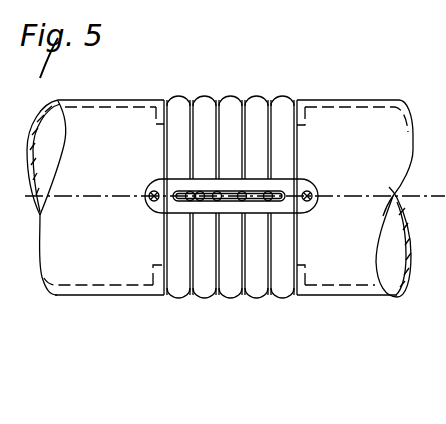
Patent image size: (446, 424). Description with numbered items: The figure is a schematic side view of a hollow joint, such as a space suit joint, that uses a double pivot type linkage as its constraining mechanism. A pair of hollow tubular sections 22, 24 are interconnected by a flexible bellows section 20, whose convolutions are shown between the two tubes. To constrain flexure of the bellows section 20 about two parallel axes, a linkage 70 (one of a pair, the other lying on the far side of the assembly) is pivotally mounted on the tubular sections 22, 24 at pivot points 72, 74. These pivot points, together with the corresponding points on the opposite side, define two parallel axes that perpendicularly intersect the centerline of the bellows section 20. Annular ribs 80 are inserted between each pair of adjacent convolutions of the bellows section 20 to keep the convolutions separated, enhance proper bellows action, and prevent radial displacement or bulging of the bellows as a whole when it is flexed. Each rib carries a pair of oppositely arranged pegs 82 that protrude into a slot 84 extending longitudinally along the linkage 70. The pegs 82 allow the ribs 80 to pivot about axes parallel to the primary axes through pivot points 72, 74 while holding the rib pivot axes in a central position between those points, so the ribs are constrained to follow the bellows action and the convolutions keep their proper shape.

The bellows section 20 is at (245, 218).
The tubular section 22 is at (126, 296).
The tubular section 24 is at (337, 297).
The linkage 70 is at (231, 200).
The pivot point 72 is at (145, 200).
The pivot point 74 is at (311, 188).
The annular ribs 80 is at (272, 161).
The pegs 82 is at (285, 237).
The slot 84 is at (208, 190).